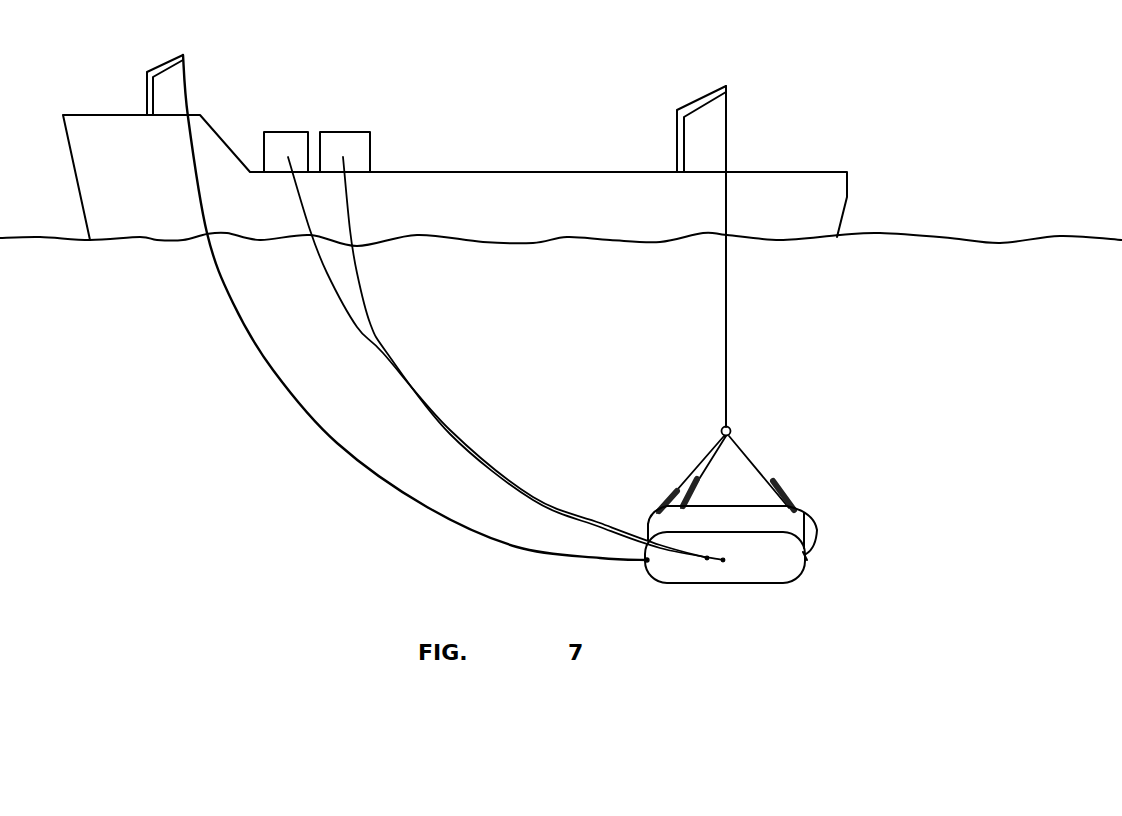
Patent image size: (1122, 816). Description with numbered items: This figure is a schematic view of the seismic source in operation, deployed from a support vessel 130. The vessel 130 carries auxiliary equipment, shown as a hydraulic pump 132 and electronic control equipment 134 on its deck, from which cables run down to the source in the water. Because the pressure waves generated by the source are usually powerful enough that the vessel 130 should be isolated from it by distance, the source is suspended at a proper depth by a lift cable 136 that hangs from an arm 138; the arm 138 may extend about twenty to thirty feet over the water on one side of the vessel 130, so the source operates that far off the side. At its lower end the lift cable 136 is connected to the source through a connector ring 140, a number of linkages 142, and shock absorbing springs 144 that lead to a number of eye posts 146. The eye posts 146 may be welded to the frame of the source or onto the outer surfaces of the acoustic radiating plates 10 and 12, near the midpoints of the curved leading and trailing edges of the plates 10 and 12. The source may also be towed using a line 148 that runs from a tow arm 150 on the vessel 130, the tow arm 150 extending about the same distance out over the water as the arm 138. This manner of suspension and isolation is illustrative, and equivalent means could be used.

The acoustic radiating plate 10 is at (814, 527).
The acoustic radiating plate 12 is at (785, 575).
The support vessel 130 is at (503, 172).
The hydraulic pump 132 is at (278, 137).
The electronic control equipment 134 is at (337, 133).
The lift cable 136 is at (730, 311).
The arm 138 is at (705, 95).
The connector ring 140 is at (721, 429).
The linkages 142 is at (750, 452).
The shock absorbing springs 144 is at (787, 490).
The eye posts 146 is at (807, 560).
The line 148 is at (273, 372).
The tow arm 150 is at (165, 63).